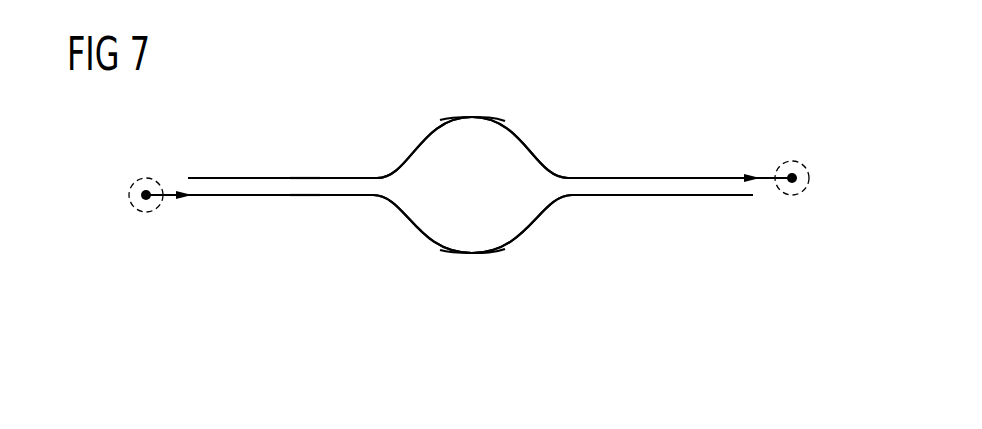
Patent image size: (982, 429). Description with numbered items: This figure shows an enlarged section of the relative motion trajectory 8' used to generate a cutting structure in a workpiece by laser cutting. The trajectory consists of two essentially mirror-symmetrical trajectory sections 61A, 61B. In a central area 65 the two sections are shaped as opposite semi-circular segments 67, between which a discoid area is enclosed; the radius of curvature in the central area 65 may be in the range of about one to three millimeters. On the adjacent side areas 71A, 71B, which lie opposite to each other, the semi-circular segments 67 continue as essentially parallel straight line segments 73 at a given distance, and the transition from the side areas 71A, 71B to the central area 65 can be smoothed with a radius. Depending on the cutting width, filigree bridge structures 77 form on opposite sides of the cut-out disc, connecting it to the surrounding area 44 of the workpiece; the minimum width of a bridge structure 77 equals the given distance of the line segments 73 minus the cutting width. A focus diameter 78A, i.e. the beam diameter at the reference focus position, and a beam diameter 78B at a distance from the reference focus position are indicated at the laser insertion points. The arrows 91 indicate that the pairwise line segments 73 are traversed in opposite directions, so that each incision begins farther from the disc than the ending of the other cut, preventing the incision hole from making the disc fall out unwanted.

The relative motion trajectory 8' is at (469, 114).
The surrounding area 44 is at (600, 234).
The first trajectory section 61A is at (257, 156).
The second trajectory section 61B is at (220, 222).
The central area 65 is at (454, 293).
The semi-circular segments 67 is at (478, 117).
The first side area 71A is at (264, 262).
The second side area 71B is at (683, 265).
The line segments 73 is at (300, 177).
The bridge structure 77 is at (645, 178).
The focus diameter 78A is at (129, 193).
The beam diameter 78B is at (138, 176).
The arrows 91 is at (183, 200).